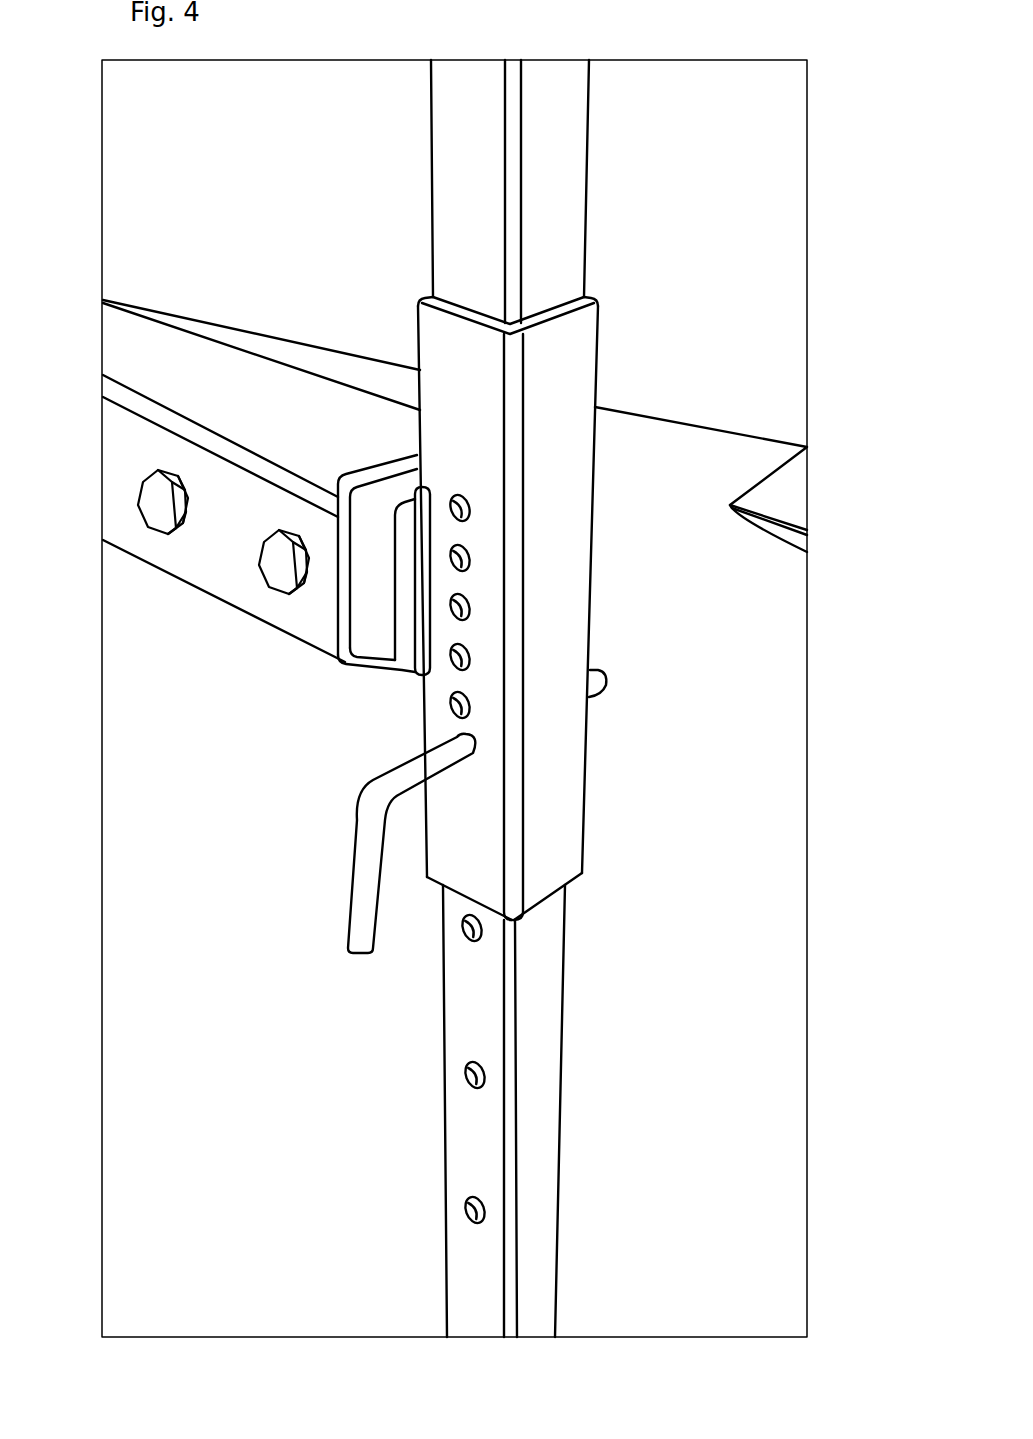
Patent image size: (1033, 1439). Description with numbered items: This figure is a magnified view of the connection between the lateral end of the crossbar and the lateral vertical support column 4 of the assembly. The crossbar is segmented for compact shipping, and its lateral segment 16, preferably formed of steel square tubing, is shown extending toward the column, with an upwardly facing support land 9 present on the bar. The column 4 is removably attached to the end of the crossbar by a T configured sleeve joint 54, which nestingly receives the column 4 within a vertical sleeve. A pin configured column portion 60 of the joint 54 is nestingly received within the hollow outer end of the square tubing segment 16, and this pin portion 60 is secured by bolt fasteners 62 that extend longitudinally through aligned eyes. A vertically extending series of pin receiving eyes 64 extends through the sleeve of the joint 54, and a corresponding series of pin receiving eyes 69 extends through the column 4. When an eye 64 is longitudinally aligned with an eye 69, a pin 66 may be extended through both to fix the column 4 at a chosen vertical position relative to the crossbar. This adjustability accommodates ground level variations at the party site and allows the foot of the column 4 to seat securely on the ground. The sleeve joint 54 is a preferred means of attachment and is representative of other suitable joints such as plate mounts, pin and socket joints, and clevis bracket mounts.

The lateral vertical support column 4 is at (558, 196).
The upwardly facing support land 9 is at (202, 380).
The lateral segment of the crossbar 16 is at (208, 565).
The T configured sleeve joint 54 is at (555, 474).
The pin configured column portion 60 is at (377, 617).
The bolt fastener 62 is at (158, 498).
The pin receiving eye 64 is at (440, 503).
The pin 66 is at (362, 863).
The pin receiving eye 69 is at (468, 1210).